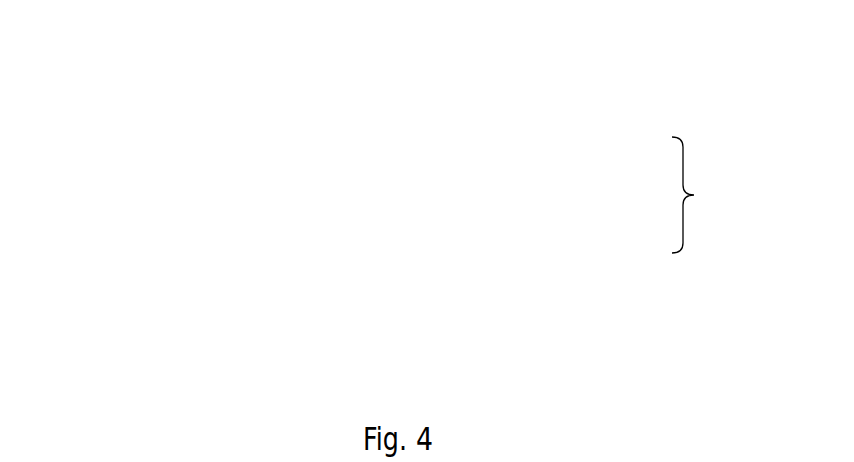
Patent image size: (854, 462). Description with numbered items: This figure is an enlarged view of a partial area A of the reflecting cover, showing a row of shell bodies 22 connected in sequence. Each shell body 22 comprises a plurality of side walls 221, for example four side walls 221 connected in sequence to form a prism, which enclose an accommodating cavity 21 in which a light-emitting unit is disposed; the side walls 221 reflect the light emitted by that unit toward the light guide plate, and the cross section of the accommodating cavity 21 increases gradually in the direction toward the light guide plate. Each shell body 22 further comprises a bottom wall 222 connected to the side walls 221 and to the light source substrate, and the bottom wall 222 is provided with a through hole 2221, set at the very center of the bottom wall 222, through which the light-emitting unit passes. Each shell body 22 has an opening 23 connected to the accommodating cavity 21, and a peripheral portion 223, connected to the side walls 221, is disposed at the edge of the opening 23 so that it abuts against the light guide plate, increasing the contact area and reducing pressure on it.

The accommodating cavity 21 is at (471, 192).
The shell body 22 is at (708, 195).
The side wall 221 is at (498, 193).
The bottom wall 222 is at (483, 220).
The through hole 2221 is at (464, 224).
The peripheral portion 223 is at (527, 184).
The opening 23 is at (437, 222).
The partial area A is at (167, 202).